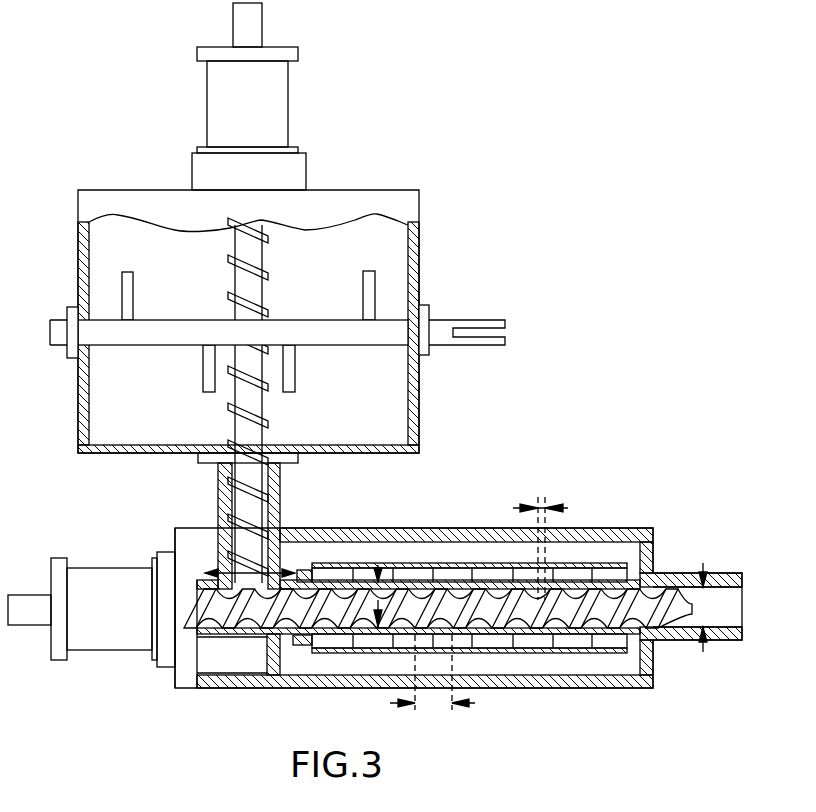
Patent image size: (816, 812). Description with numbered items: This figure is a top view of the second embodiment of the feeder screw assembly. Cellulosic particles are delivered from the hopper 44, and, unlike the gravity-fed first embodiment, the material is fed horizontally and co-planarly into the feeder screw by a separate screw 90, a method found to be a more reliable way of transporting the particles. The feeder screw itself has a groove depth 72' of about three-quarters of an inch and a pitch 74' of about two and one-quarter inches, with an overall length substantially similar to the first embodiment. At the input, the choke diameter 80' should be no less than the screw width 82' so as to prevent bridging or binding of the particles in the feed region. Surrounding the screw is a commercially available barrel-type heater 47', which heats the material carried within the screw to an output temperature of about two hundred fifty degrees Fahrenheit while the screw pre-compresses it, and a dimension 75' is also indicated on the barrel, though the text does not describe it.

The hopper 44 is at (393, 248).
The screw 90 is at (253, 398).
The choke diameter 80' is at (278, 533).
The barrel wall thickness 75' is at (572, 523).
The groove depth 72' is at (346, 646).
The pitch 74' is at (458, 701).
The barrel-type heater 47' is at (473, 687).
The screw width 82' is at (705, 639).